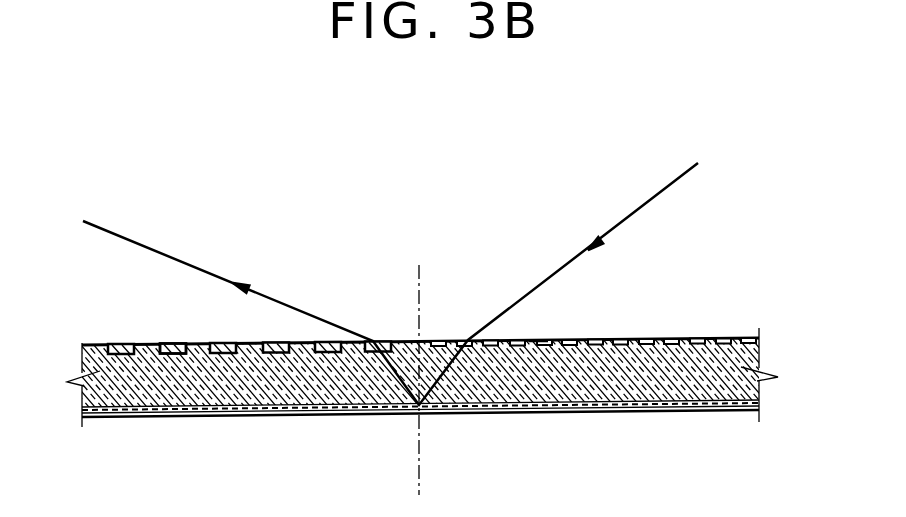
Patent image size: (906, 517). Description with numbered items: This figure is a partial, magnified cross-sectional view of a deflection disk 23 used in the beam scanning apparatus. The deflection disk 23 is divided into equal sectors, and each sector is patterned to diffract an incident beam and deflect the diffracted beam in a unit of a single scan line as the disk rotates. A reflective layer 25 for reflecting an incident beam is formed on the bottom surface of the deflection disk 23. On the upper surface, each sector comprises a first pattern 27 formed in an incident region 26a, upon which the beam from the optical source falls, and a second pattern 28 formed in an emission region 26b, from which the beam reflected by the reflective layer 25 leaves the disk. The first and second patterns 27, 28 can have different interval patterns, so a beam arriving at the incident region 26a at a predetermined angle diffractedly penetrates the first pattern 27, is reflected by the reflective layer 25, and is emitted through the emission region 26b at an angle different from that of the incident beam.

The deflection disk 23 is at (113, 407).
The reflective layer 25 is at (315, 412).
The incident region 26a is at (673, 338).
The emission region 26b is at (148, 342).
The first pattern 27 is at (540, 340).
The second pattern 28 is at (172, 357).